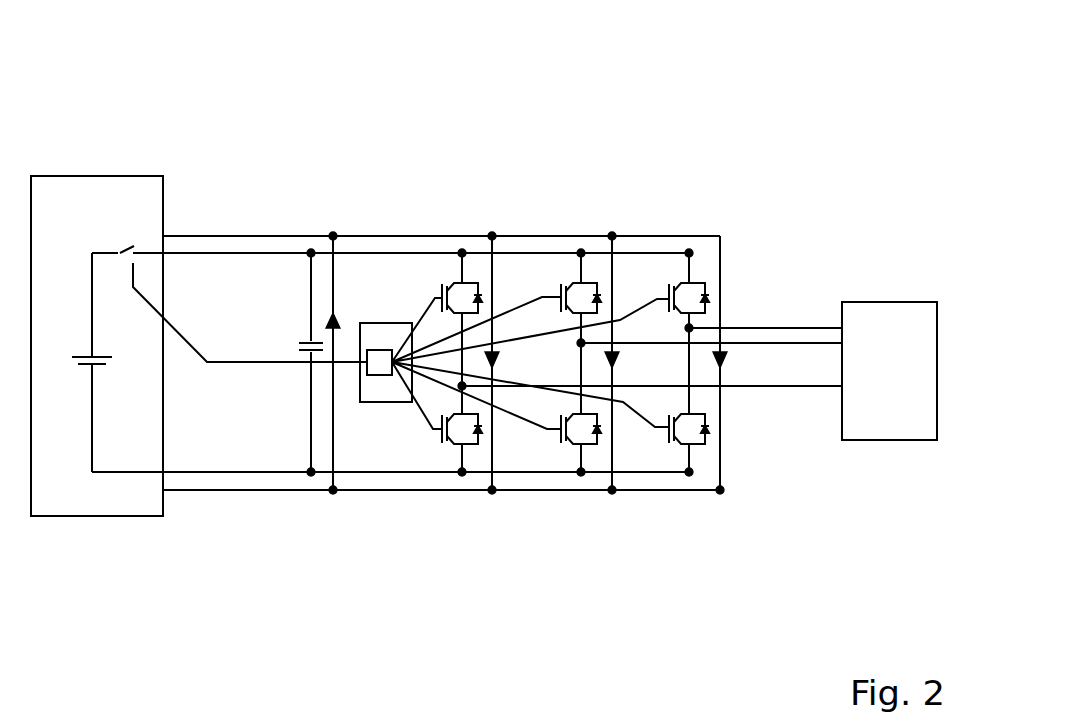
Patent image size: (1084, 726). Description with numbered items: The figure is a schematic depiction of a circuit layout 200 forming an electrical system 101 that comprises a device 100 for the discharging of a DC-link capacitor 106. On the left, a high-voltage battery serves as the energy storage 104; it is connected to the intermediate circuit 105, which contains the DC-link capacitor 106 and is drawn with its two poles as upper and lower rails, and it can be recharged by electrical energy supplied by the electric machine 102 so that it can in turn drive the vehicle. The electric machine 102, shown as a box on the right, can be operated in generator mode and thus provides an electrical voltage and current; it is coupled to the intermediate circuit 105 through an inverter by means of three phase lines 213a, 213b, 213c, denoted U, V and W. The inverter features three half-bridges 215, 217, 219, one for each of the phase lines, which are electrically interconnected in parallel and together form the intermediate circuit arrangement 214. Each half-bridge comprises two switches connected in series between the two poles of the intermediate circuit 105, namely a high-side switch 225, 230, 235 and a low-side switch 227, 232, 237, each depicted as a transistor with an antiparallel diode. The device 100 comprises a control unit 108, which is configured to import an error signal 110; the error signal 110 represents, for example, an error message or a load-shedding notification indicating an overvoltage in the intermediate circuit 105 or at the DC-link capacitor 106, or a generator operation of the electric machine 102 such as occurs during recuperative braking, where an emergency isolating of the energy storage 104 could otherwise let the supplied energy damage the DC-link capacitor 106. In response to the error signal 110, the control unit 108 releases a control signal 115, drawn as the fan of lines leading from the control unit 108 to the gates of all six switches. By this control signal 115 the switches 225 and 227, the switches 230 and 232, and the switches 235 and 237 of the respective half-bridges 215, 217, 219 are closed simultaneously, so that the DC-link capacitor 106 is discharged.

The circuit layout 200 is at (203, 147).
The energy storage 104 is at (110, 516).
The intermediate circuit 105 is at (232, 234).
The DC-link capacitor 106 is at (311, 341).
The device 100 is at (378, 323).
The control unit 108 is at (372, 402).
The error signal 110 is at (238, 362).
The control signal 115 is at (443, 338).
The electrical system 101 is at (617, 172).
The intermediate circuit 214 is at (511, 200).
The high-side switch 225 is at (472, 273).
The high-side switch 230 is at (592, 273).
The high-side switch 235 is at (698, 273).
The low-side switch 227 is at (472, 446).
The low-side switch 232 is at (592, 446).
The low-side switch 237 is at (698, 446).
The half-bridge 215 is at (452, 366).
The half-bridge 217 is at (575, 370).
The half-bridge 219 is at (684, 370).
The phase line U 213a is at (790, 387).
The phase line V 213b is at (822, 342).
The phase line W 213c is at (766, 327).
The electric machine 102 is at (893, 302).